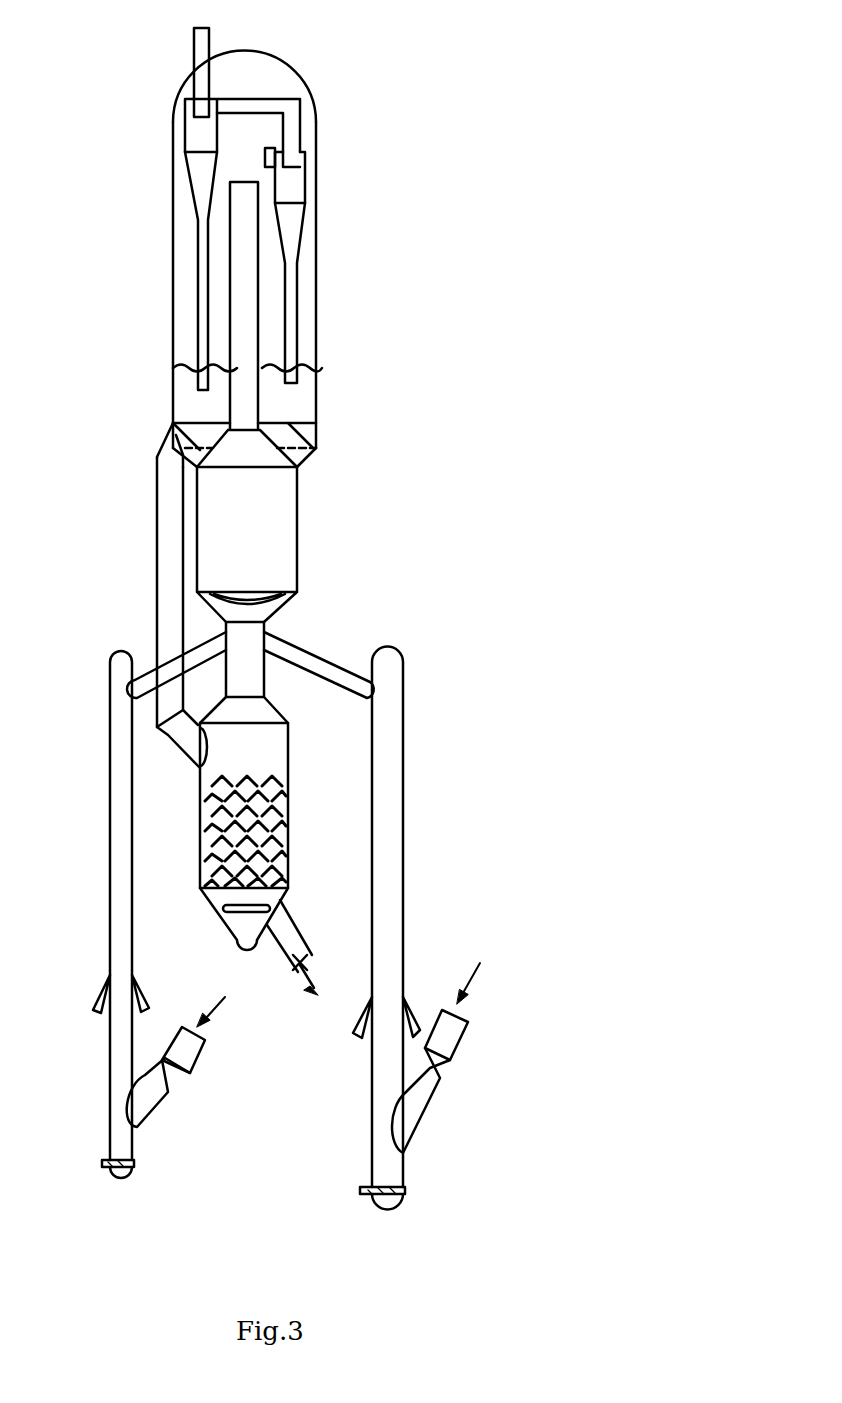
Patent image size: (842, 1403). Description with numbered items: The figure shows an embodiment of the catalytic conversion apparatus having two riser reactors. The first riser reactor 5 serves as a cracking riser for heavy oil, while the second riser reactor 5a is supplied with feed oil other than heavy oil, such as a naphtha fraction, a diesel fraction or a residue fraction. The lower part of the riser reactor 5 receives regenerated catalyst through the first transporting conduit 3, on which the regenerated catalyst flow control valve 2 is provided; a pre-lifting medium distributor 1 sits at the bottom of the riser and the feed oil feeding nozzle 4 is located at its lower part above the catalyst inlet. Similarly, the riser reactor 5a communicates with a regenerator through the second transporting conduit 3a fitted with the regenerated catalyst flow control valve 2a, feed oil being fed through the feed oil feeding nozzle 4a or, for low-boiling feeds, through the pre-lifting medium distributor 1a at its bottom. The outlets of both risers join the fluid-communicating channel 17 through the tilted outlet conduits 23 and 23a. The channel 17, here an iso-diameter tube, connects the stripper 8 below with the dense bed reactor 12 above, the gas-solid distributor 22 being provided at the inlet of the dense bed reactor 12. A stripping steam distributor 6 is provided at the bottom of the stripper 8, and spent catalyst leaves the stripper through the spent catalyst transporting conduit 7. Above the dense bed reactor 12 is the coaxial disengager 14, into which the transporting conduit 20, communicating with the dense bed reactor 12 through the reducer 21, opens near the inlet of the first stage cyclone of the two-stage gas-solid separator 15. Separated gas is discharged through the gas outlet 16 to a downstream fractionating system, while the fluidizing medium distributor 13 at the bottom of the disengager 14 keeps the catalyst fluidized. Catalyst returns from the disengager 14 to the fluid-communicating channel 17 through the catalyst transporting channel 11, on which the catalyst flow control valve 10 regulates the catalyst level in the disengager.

The pre-lifting medium distributor 1 is at (393, 1208).
The pre-lifting medium distributor 1a is at (130, 1178).
The regenerated catalyst flow control valve 2 is at (438, 1080).
The regenerated catalyst flow control valve 2a is at (168, 1092).
The first transporting conduit 3 is at (463, 1033).
The second transporting conduit 3a is at (197, 1057).
The feed oil feeding nozzle 4 is at (404, 1030).
The feed oil feeding nozzle 4a is at (143, 1005).
The first feed oil cracking riser reactor 5 is at (372, 918).
The second feed oil cracking riser reactor 5a is at (110, 893).
The stripping steam distributor 6 is at (238, 917).
The spent catalyst transporting conduit 7 is at (282, 963).
The stripper 8 is at (288, 822).
The catalyst flow control valve 10 is at (193, 728).
The catalyst transporting channel 11 is at (155, 563).
The dense bed reactor 12 is at (298, 527).
The fluidizing medium distributor 13 is at (173, 423).
The disengager 14 is at (317, 248).
The gas-solid separator 15 is at (279, 183).
The gas outlet 16 is at (195, 53).
The fluid-communicating channel 17 is at (270, 677).
The transporting conduit 20 is at (227, 277).
The reducer 21 is at (288, 422).
The gas-solid distributor 22 is at (253, 594).
The outlet conduit 23 is at (313, 667).
The outlet conduit 23a is at (150, 660).